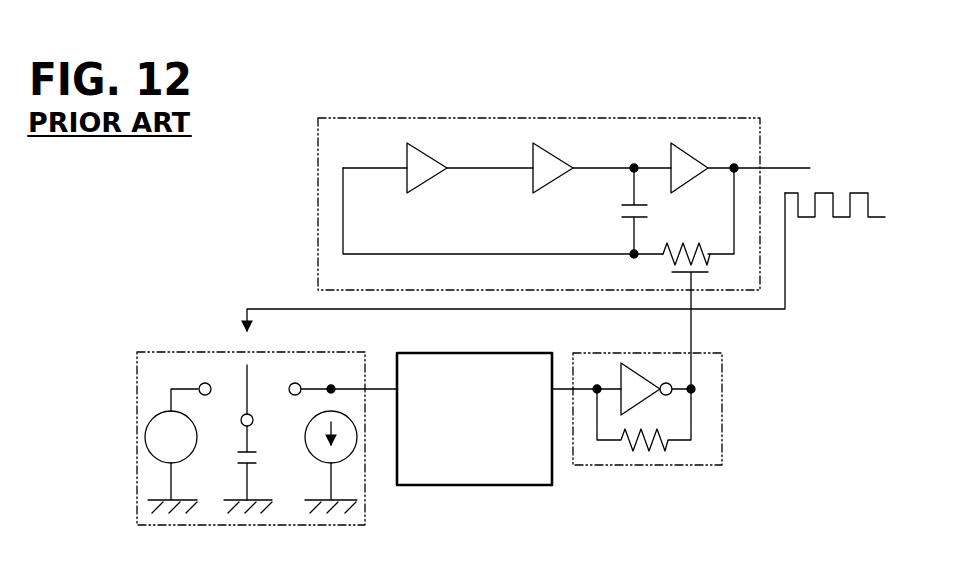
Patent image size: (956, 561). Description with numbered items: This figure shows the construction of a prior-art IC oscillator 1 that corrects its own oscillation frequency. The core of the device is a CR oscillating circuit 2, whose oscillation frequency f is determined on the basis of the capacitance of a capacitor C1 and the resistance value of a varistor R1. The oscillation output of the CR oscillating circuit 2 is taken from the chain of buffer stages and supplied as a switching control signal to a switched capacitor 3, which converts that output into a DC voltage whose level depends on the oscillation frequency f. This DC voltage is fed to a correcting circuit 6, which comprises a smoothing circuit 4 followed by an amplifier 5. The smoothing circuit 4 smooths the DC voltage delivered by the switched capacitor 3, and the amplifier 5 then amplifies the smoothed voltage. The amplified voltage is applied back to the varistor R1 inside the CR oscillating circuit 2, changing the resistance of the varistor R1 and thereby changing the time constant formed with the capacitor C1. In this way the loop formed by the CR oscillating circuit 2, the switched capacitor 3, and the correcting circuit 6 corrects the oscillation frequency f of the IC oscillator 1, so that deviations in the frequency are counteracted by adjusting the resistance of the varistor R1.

The IC oscillator 1 is at (294, 130).
The CR oscillating circuit 2 is at (622, 118).
The switched capacitor 3 is at (186, 352).
The smoothing circuit 4 is at (478, 353).
The amplifier 5 is at (722, 366).
The correcting circuit 6 is at (742, 418).
The capacitor C1 is at (622, 211).
The varistor R1 is at (688, 243).
The oscillation frequency f is at (553, 241).